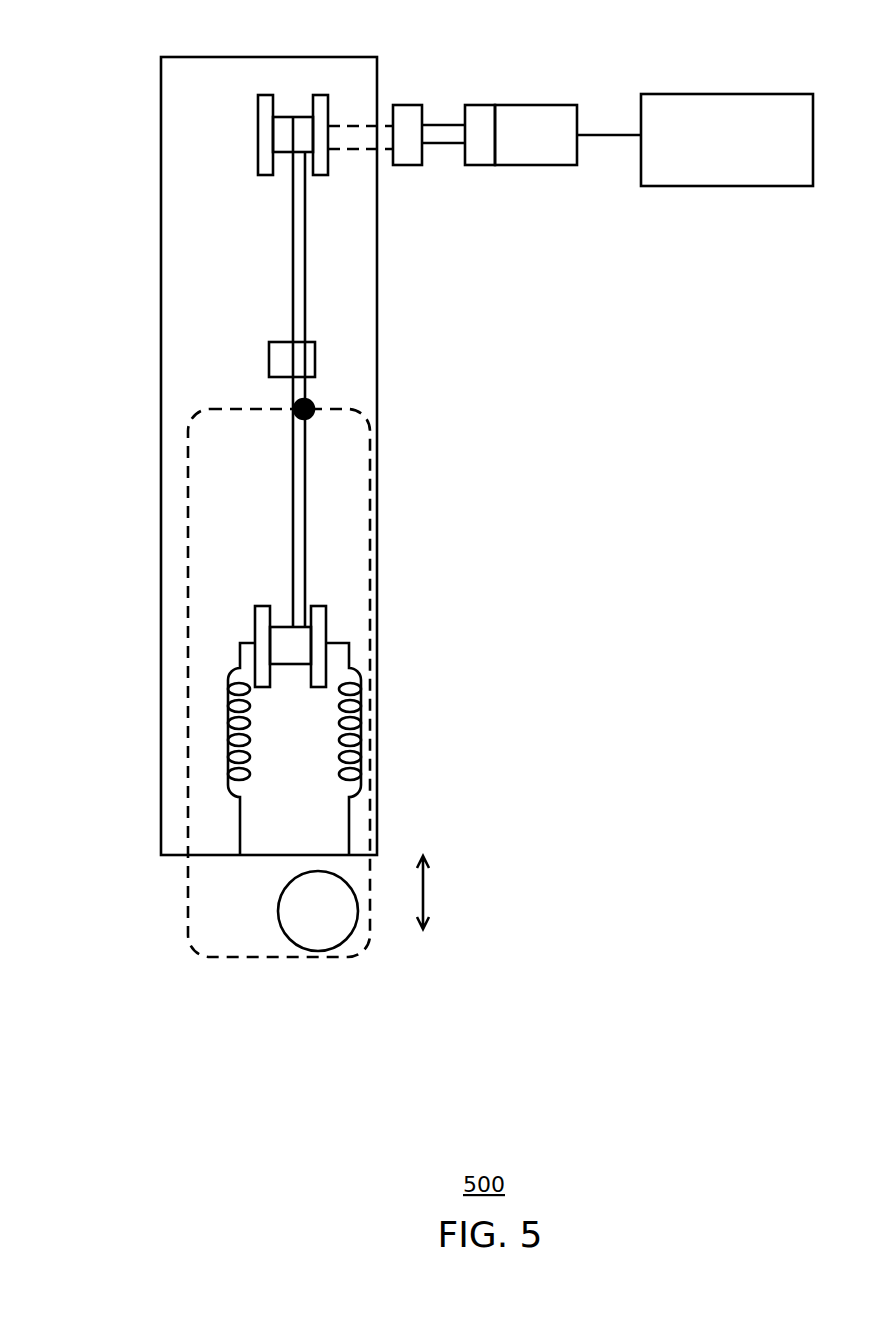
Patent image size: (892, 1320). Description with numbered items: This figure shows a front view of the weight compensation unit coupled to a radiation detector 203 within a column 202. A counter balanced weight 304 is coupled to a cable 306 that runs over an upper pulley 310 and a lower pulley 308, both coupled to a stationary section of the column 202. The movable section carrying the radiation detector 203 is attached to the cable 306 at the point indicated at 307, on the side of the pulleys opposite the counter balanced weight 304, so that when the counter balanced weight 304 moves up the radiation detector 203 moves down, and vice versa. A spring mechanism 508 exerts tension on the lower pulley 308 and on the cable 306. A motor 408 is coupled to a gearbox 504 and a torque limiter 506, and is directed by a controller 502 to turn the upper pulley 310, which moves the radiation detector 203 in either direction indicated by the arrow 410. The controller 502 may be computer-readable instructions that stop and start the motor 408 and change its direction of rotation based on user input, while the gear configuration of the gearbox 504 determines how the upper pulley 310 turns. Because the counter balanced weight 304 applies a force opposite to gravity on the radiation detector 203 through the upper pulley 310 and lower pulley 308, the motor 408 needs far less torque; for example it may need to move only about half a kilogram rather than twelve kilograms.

The column 202 is at (161, 481).
The radiation detector 203 is at (278, 911).
The counter balanced weight 304 is at (269, 352).
The cable 306 is at (305, 247).
The attachment point 307 is at (313, 405).
The lower pulley 308 is at (255, 618).
The upper pulley 310 is at (257, 133).
The motor 408 is at (538, 105).
The arrow 410 is at (424, 893).
The controller 502 is at (774, 94).
The gearbox 504 is at (480, 105).
The torque limiter 506 is at (407, 105).
The spring mechanism 508 is at (230, 735).